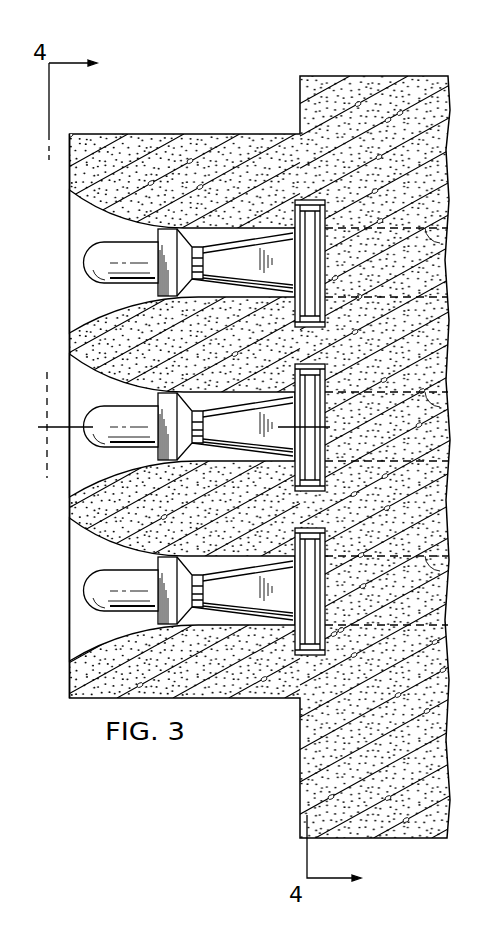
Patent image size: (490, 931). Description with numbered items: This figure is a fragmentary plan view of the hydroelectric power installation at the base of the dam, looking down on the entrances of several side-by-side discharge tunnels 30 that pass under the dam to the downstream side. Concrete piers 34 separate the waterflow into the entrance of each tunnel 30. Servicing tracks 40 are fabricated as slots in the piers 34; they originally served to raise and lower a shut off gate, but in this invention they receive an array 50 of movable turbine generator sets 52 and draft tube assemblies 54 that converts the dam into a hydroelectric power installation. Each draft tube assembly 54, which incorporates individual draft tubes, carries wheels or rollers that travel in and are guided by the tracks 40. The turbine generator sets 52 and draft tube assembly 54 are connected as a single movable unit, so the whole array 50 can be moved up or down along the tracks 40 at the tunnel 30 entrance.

The discharge tunnel 30 is at (449, 241).
The pier 34 is at (88, 168).
The servicing track 40 is at (325, 203).
The array of movable turbine generator sets and draft tube assemblies 50 is at (116, 420).
The turbine generator set 52 is at (121, 413).
The draft tube assembly 54 is at (254, 231).